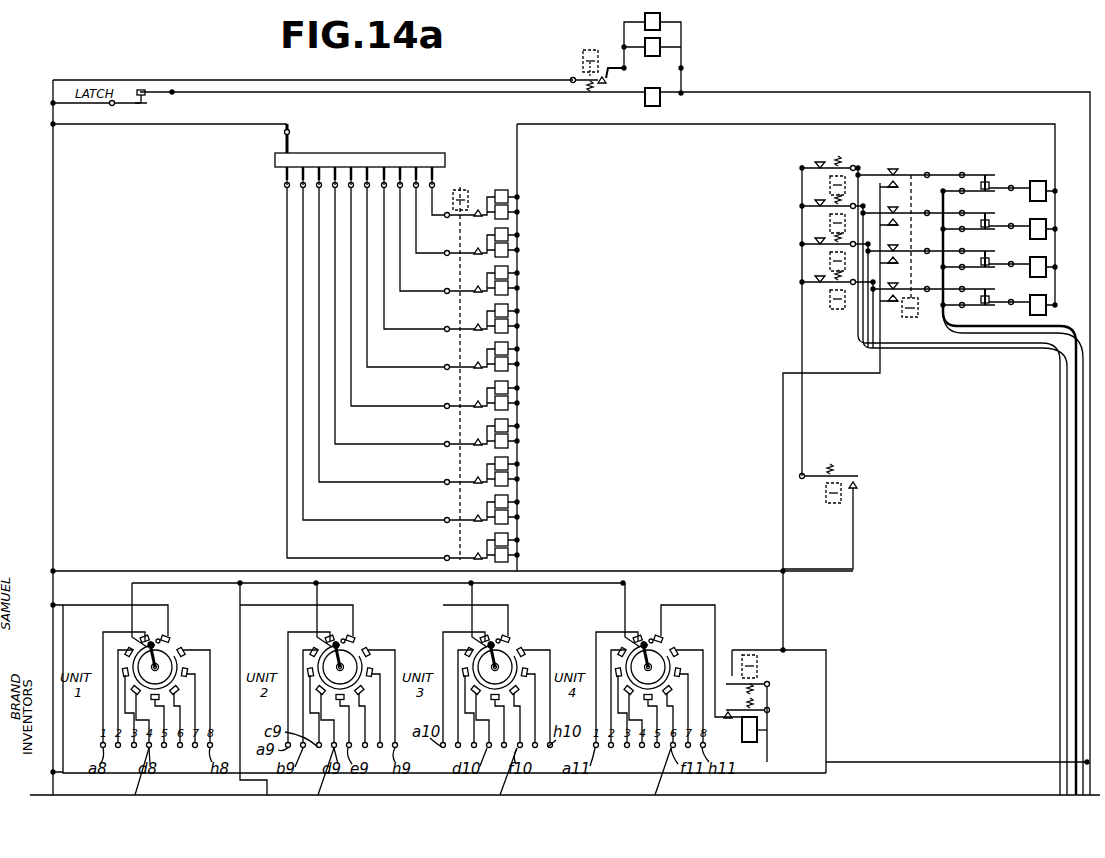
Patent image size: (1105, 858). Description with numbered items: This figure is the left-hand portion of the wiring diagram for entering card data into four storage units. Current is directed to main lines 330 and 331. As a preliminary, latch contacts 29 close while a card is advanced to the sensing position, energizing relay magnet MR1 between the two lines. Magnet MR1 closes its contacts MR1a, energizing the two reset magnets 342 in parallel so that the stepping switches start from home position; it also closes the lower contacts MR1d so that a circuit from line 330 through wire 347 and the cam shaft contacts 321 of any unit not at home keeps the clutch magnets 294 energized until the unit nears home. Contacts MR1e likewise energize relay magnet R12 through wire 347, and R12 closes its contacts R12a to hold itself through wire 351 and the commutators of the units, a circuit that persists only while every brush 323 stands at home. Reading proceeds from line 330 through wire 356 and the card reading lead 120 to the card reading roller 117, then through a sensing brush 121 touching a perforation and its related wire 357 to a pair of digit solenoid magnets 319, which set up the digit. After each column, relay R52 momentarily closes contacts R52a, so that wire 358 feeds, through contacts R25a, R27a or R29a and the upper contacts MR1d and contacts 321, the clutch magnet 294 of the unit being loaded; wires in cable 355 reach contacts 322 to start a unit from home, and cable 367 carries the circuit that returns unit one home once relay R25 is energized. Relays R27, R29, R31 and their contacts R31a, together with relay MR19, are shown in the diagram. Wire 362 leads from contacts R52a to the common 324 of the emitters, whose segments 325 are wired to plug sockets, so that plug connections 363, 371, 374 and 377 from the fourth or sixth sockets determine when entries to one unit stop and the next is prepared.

The main line 330 is at (53, 399).
The latch contacts 29 is at (148, 100).
The wire 356 is at (98, 125).
The card reading input line 120 is at (295, 142).
The card reading roller 117 is at (435, 153).
The sensing brushes 121 is at (303, 180).
The wire 357 is at (335, 240).
The relay contact MR19 is at (472, 179).
The digit solenoid magnets 319 is at (510, 335).
The contacts of relay MR1 MR1a is at (606, 66).
The relay magnet MR1 is at (583, 58).
The reset magnets 342 is at (662, 48).
The contacts of relay R25 R25a is at (815, 166).
The relay magnet R25 is at (829, 188).
The contacts of relay R27 R27a is at (815, 204).
The relay magnet R27 is at (829, 226).
The contacts of relay R29 R29a is at (815, 242).
The relay R29 is at (829, 264).
The relay contact R31a is at (815, 280).
The relay R31 is at (829, 300).
The contacts of relay MR1 MR1d is at (893, 168).
The cam shaft contacts 321 is at (984, 177).
The contacts 322 is at (996, 186).
The clutch magnets 294 is at (1030, 268).
The cable 355 is at (1035, 334).
The cable 367 is at (950, 348).
The main line 331 is at (1083, 452).
The contacts of relay R52 R52a is at (860, 479).
The relay R52 is at (831, 505).
The wire 347 is at (783, 436).
The wire 358 is at (118, 570).
The wire 362 is at (132, 583).
The wire 351 is at (702, 610).
The contacts of relay MR1 MR1e is at (728, 680).
The contacts of relay R12 R12a is at (725, 720).
The relay magnet R12 is at (758, 730).
The brush 323 is at (165, 655).
The emitter segment 325 is at (162, 645).
The common of the storage unit emitters 324 is at (128, 654).
The plug connection 363 is at (133, 790).
The connection 371 is at (317, 790).
The connection 374 is at (499, 790).
The connection 377 is at (654, 792).